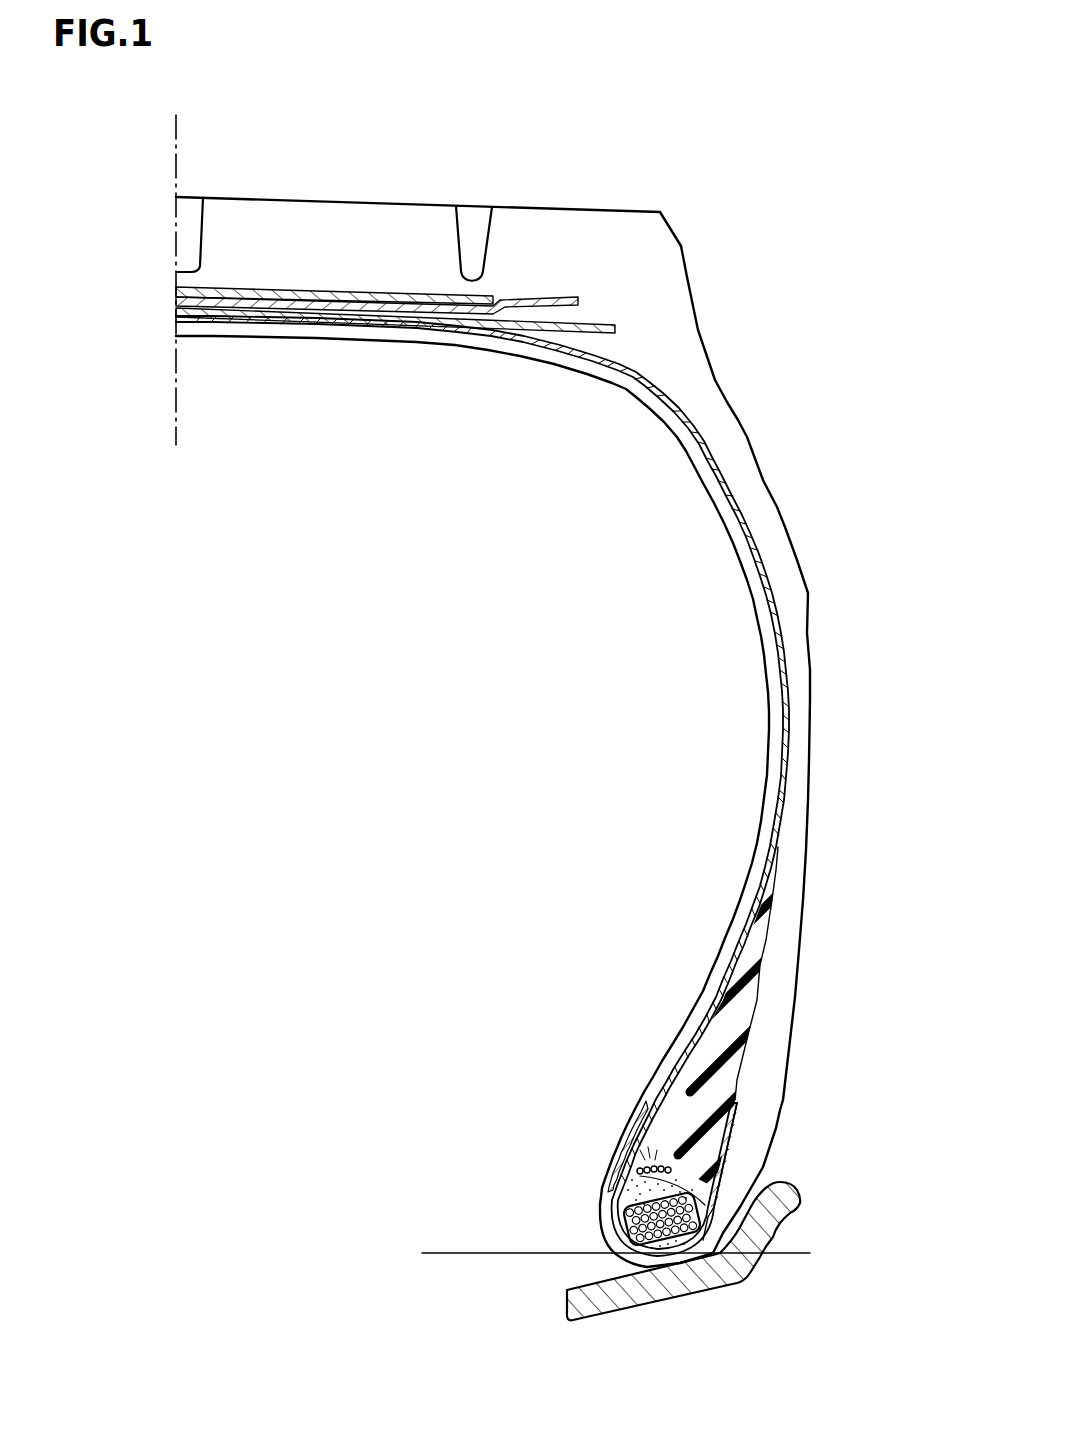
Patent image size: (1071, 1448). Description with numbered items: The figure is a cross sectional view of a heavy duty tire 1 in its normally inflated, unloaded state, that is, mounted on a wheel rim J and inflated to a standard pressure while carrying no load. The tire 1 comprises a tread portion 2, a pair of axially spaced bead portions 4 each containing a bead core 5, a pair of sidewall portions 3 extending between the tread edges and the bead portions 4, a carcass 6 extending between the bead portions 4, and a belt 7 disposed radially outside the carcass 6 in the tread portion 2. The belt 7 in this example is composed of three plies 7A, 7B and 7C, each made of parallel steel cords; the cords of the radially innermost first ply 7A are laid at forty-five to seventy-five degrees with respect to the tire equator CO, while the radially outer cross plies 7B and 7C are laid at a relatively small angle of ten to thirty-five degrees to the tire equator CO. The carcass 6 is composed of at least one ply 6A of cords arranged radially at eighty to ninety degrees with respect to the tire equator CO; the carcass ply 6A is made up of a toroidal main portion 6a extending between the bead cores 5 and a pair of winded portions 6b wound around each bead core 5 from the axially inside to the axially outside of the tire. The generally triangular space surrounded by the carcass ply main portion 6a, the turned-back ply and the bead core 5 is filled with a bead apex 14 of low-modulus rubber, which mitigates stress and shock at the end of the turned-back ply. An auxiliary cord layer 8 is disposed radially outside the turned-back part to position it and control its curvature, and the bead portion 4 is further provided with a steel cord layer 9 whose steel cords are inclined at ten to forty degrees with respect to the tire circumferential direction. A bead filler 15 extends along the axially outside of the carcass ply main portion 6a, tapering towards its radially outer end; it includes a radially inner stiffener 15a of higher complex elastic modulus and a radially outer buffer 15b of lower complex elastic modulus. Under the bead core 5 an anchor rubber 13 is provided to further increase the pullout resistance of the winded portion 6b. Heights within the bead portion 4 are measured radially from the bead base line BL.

The heavy duty tire 1 is at (683, 211).
The tread portion 2 is at (370, 184).
The sidewall portion 3 is at (836, 676).
The bead portion 4 is at (754, 1217).
The bead core 5 is at (617, 1210).
The carcass 6 is at (727, 528).
The carcass ply 6A is at (540, 965).
The main portion 6a is at (700, 1025).
The winded portion 6b is at (651, 1101).
The belt 7 is at (82, 262).
The first ply 7A is at (177, 310).
The cross ply 7B is at (177, 301).
The cross ply 7C is at (177, 292).
The auxiliary cord layer 8 is at (653, 1160).
The steel cord layer 9 is at (620, 1177).
The anchor rubber 13 is at (662, 1249).
The bead apex 14 is at (697, 1157).
The bead filler 15 is at (882, 1025).
The stiffener 15a is at (738, 1150).
The buffer 15b is at (737, 1078).
The tire equator CO is at (179, 304).
The bead base line BL is at (465, 1252).
The wheel rim J is at (753, 1275).